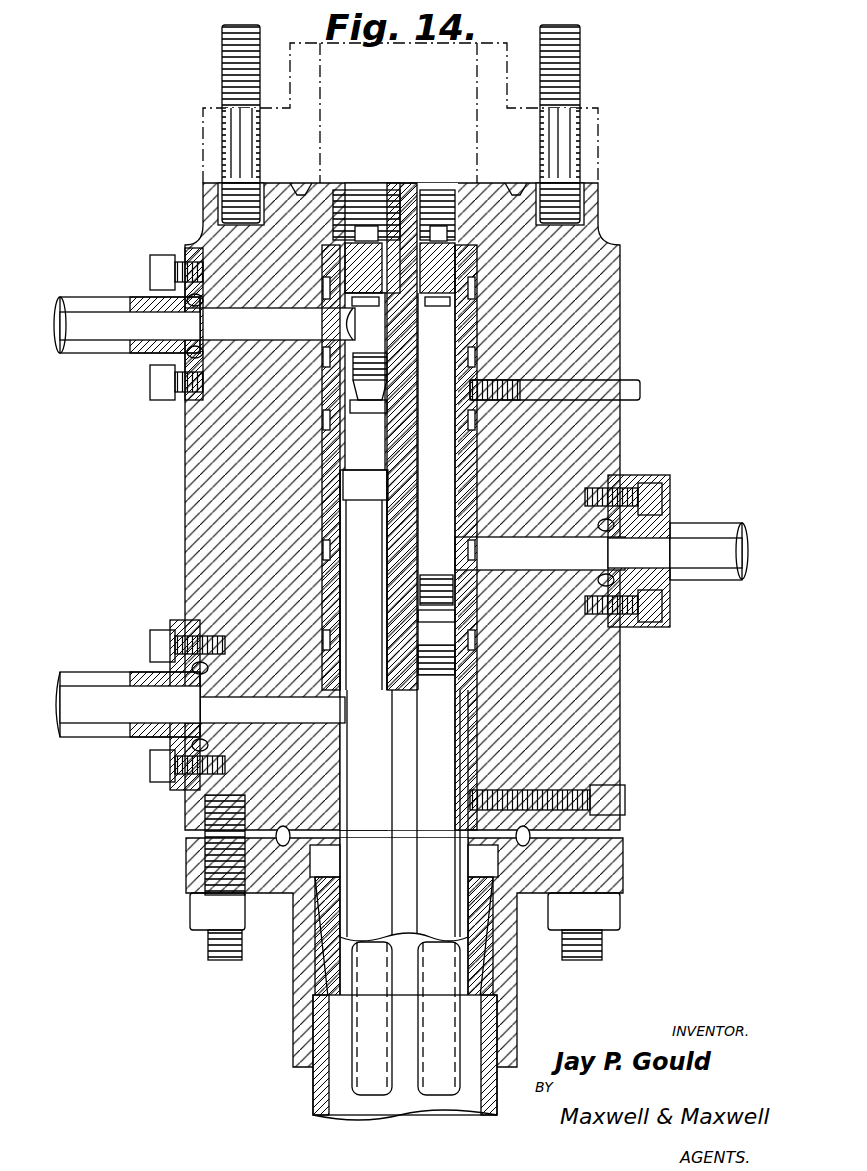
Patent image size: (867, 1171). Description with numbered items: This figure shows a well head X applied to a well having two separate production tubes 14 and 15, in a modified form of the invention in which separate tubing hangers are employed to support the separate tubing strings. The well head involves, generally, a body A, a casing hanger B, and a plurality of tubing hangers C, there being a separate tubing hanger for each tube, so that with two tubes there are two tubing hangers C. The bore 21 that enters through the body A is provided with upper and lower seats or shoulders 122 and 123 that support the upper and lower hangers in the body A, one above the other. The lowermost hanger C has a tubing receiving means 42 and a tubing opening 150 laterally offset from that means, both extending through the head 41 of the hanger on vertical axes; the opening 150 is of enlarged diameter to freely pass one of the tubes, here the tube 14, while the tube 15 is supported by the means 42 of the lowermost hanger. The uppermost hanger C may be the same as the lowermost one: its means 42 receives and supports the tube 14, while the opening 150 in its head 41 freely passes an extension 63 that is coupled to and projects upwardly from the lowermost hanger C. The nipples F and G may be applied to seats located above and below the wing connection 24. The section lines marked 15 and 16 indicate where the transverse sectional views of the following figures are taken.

The production tube 14 is at (357, 1080).
The production tube 15 is at (428, 1090).
The section line 16 is at (145, 553).
The bore 21 is at (345, 553).
The wing connection 24 is at (85, 300).
The head 41 is at (472, 342).
The tubing receiving means 42 is at (322, 440).
The extension 63 is at (465, 252).
The upper seat or shoulder 122 is at (470, 450).
The lower seat or shoulder 123 is at (468, 686).
The tubing opening 150 is at (462, 310).
The body A is at (185, 487).
The casing hanger B is at (236, 1015).
The tubing hanger C is at (548, 268).
The nipple F is at (366, 235).
The nipple G is at (440, 235).
The well head X is at (130, 205).